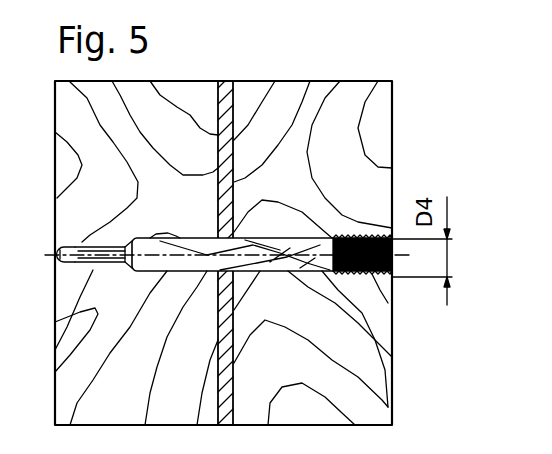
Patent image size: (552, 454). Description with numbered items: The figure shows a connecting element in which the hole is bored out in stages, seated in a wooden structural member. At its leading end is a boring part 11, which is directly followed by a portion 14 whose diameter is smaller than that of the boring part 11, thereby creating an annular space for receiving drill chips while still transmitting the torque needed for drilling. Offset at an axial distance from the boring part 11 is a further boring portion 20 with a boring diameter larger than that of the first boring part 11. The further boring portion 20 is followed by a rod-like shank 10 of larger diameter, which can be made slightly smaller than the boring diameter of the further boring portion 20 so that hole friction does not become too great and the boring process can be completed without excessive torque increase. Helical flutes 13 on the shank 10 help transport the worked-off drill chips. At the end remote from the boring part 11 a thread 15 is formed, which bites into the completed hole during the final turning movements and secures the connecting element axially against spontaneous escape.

The shank 10 is at (221, 218).
The boring part 11 is at (62, 262).
The flutes 13 is at (187, 250).
The portion 14 is at (94, 270).
The thread 15 is at (356, 236).
The further boring portion 20 is at (128, 247).